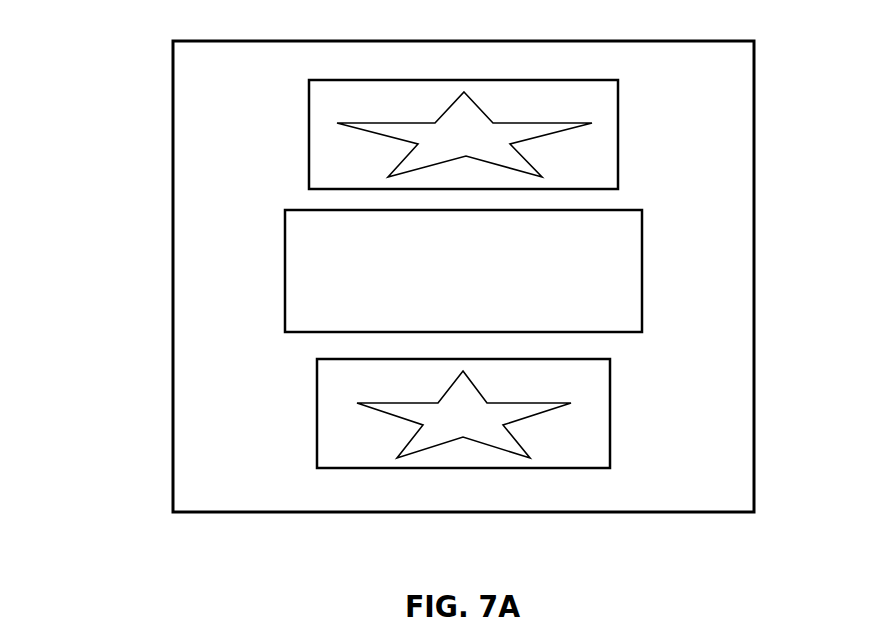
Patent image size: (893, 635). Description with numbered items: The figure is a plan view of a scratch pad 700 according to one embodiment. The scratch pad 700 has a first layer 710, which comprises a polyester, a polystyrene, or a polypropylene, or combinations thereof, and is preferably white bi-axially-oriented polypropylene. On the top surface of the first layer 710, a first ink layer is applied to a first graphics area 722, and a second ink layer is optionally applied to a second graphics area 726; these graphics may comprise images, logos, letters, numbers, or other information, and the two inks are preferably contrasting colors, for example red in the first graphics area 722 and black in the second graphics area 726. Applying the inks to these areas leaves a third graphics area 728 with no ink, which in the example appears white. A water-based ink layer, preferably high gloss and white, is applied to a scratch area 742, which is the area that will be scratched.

The scratch pad 700 is at (148, 72).
The first layer 710 is at (667, 512).
The first graphics area 722 is at (335, 414).
The second graphics area 726 is at (328, 135).
The third graphics area 728 is at (697, 290).
The scratch area 742 is at (607, 249).